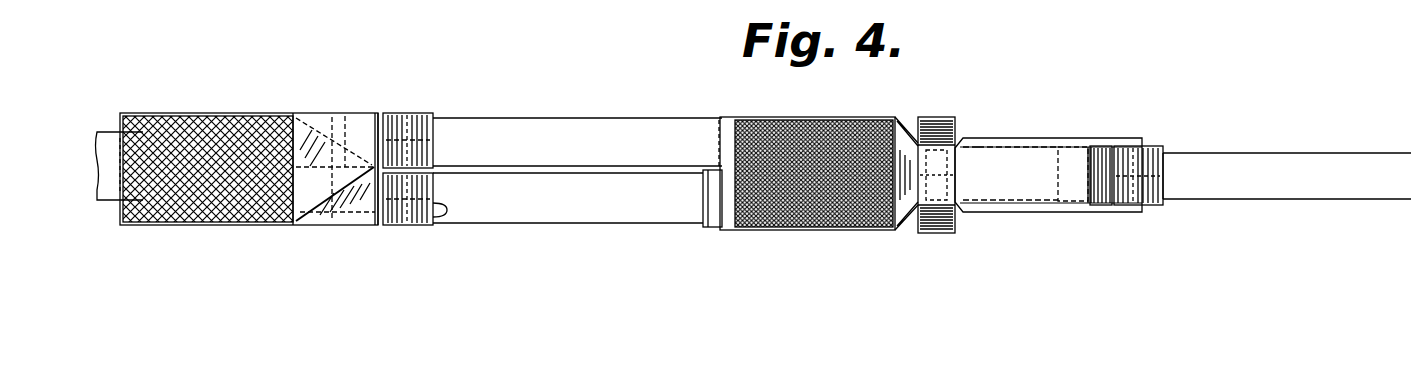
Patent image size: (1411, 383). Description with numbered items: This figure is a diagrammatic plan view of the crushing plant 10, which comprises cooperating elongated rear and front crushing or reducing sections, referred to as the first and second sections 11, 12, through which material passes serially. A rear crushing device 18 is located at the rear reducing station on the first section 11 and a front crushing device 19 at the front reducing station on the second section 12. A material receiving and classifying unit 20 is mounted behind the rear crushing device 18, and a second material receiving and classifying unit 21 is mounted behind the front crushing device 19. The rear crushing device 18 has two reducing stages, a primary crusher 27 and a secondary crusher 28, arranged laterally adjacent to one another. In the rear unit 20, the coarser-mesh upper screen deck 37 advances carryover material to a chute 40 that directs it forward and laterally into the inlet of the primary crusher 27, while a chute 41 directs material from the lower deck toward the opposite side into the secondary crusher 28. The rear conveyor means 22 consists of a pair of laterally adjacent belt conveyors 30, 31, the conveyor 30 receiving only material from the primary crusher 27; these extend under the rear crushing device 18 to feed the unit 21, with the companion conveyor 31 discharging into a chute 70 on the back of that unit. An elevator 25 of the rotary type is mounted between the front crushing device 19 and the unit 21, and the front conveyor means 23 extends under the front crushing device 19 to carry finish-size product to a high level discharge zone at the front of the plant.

The crushing plant 10 is at (706, 86).
The first section 11 is at (328, 97).
The second section 12 is at (1054, 124).
The rear crushing device 18 is at (393, 104).
The front crushing device 19 is at (1116, 134).
The material receiving and classifying unit 20 is at (238, 92).
The material receiving and classifying unit 21 is at (846, 108).
The rear conveyor means 22 is at (576, 74).
The front conveyor means 23 is at (1298, 150).
The elevator 25 is at (941, 112).
The primary crusher 27 is at (431, 140).
The secondary crusher 28 is at (443, 217).
The belt conveyor 30 is at (602, 126).
The companion conveyor 31 is at (607, 212).
The upper screen deck 37 is at (191, 95).
The chute 40 is at (352, 130).
The chute 41 is at (353, 212).
The chute 70 is at (712, 216).